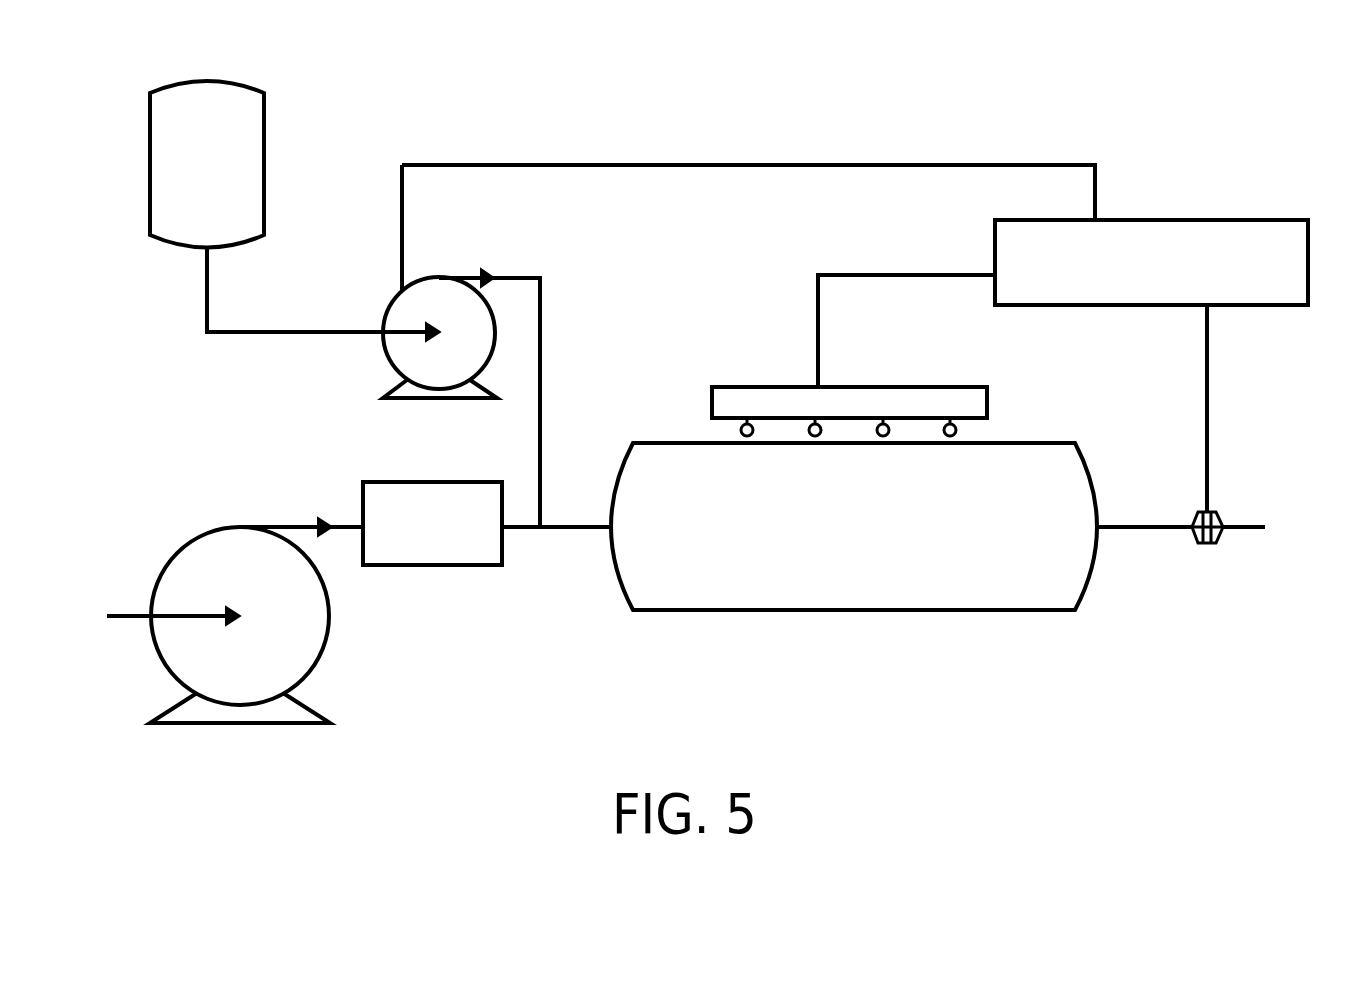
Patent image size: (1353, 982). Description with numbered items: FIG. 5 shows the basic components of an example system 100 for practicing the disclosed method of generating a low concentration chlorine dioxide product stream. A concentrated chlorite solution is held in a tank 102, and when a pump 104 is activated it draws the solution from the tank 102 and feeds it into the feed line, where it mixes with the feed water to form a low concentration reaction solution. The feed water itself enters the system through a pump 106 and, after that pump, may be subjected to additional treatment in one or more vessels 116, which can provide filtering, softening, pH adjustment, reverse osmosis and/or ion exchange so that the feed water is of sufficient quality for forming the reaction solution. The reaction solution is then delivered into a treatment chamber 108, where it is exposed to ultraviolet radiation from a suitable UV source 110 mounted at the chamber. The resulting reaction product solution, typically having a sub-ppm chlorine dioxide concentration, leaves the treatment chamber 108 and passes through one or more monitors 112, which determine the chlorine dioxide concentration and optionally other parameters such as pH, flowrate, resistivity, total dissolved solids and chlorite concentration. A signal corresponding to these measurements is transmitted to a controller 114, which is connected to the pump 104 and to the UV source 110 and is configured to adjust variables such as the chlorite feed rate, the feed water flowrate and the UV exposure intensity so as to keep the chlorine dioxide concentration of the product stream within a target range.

The system 100 is at (1048, 62).
The tank 102 is at (264, 138).
The pump 104 is at (390, 362).
The pump 106 is at (322, 660).
The treatment chamber 108 is at (1013, 612).
The UV source 110 is at (782, 390).
The monitor 112 is at (1223, 518).
The controller 114 is at (1168, 221).
The vessel 116 is at (363, 490).